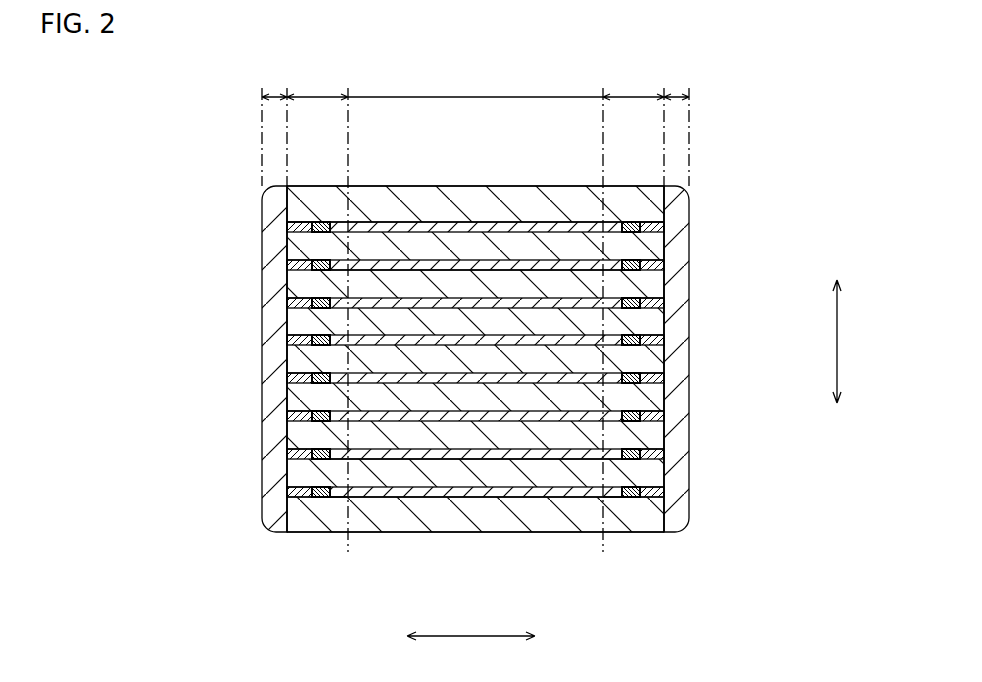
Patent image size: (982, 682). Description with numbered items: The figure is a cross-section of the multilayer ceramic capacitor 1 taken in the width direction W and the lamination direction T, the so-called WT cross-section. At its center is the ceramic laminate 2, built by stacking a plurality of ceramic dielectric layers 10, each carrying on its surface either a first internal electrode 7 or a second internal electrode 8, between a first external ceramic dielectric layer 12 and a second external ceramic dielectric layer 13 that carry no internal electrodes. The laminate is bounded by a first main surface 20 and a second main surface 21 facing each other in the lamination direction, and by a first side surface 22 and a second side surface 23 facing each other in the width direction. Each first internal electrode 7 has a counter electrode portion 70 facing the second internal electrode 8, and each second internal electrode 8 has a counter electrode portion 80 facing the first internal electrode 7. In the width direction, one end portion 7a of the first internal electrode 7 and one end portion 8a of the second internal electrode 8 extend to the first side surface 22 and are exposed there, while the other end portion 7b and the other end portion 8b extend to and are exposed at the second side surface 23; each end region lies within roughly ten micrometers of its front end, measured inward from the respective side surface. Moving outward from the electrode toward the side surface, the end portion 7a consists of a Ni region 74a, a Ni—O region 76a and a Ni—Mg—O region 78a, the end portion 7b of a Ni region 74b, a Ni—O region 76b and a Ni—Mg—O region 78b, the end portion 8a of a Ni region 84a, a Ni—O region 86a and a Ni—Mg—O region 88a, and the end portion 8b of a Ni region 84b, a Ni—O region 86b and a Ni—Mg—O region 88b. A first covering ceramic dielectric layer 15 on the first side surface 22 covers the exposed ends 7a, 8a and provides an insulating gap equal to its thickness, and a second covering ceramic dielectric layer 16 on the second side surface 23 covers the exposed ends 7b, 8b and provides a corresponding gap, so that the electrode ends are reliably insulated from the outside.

The multilayer ceramic capacitor 1 is at (186, 93).
The ceramic laminate 2 is at (390, 173).
The first internal electrode 7 is at (476, 363).
The second internal electrode 8 is at (476, 363).
The one end portion of the first internal electrode 7a is at (688, 359).
The other end portion of the first internal electrode 7b is at (267, 356).
The one end portion of the second internal electrode 8a is at (688, 398).
The other end portion of the second internal electrode 8b is at (267, 397).
The ceramic dielectric layer 10 is at (411, 375).
The first external ceramic dielectric layer 12 is at (500, 200).
The second external ceramic dielectric layer 13 is at (522, 518).
The first covering ceramic dielectric layer 15 is at (690, 220).
The second covering ceramic dielectric layer 16 is at (263, 220).
The first main surface 20 is at (418, 186).
The second main surface 21 is at (555, 532).
The first side surface 22 is at (693, 367).
The second side surface 23 is at (287, 368).
The counter electrode portion 70 is at (476, 335).
The counter electrode portion 80 is at (476, 334).
The Ni region 74a is at (614, 228).
The Ni region 74b is at (338, 228).
The Ni—O region 76a is at (630, 222).
The Ni—O region 76b is at (323, 222).
The Ni—Mg—O region 78a is at (658, 214).
The Ni—Mg—O region 78b is at (292, 212).
The Ni region 84a is at (608, 497).
The Ni region 84b is at (340, 493).
The Ni—O region 86a is at (643, 503).
The Ni—O region 86b is at (310, 500).
The Ni—Mg—O region 88a is at (655, 520).
The Ni—Mg—O region 88b is at (290, 502).